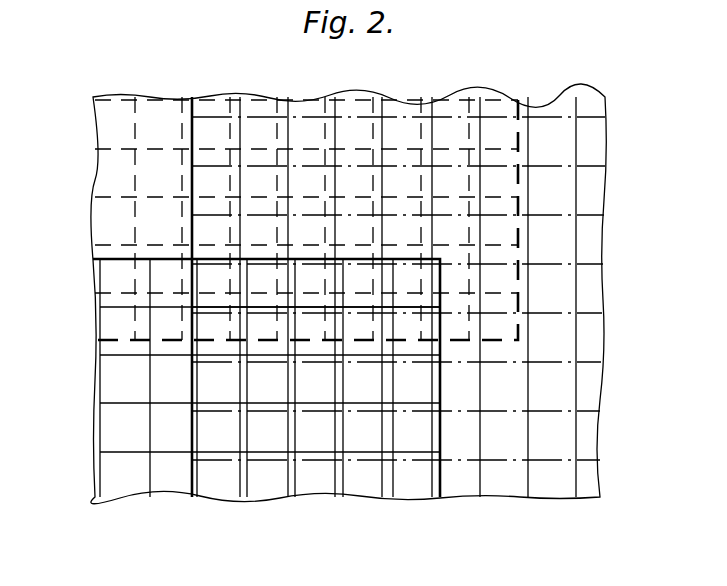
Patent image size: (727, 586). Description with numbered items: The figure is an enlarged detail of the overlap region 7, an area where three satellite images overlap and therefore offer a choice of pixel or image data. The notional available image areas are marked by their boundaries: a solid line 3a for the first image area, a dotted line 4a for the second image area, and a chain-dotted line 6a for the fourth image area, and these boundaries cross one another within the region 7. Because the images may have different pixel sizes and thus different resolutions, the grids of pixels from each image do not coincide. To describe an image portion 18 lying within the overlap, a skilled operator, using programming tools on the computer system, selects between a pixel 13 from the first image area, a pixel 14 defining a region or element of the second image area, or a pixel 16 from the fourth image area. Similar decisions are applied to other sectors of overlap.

The overlap region 7 is at (605, 138).
The pixel from image area 3 13 is at (136, 441).
The pixel of image area 4 14 is at (172, 182).
The pixel from image area 6 16 is at (515, 449).
The image portion 18 is at (372, 289).
The solid outline of image area 3 3a is at (115, 257).
The dotted outline of image area 4 4a is at (518, 112).
The chain-dotted outline of image area 6 6a is at (192, 112).